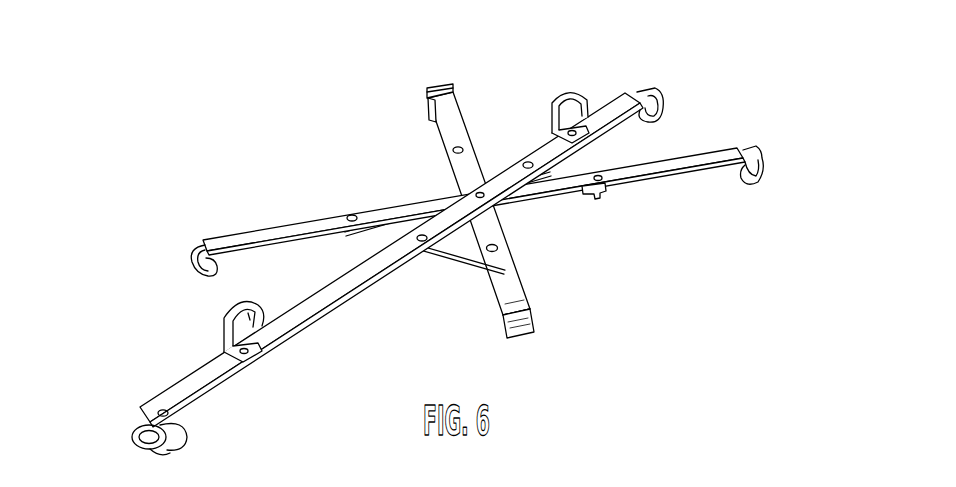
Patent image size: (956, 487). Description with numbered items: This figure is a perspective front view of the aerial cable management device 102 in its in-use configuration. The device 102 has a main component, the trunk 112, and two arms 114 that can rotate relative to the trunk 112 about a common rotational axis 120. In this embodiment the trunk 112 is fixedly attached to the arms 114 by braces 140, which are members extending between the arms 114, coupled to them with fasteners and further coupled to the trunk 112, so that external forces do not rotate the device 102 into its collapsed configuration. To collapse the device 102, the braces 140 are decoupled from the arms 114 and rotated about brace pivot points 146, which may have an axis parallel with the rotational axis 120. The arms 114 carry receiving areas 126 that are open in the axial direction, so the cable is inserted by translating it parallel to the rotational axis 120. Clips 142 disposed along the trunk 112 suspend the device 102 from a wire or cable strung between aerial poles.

The aerial cable management device 102 is at (222, 178).
The trunk 112 is at (340, 302).
The arms 114 is at (623, 170).
The rotational axis 120 is at (478, 186).
The receiving areas 126 is at (433, 90).
The braces 140 is at (545, 176).
The clips 142 is at (222, 328).
The brace pivot points 146 is at (482, 190).